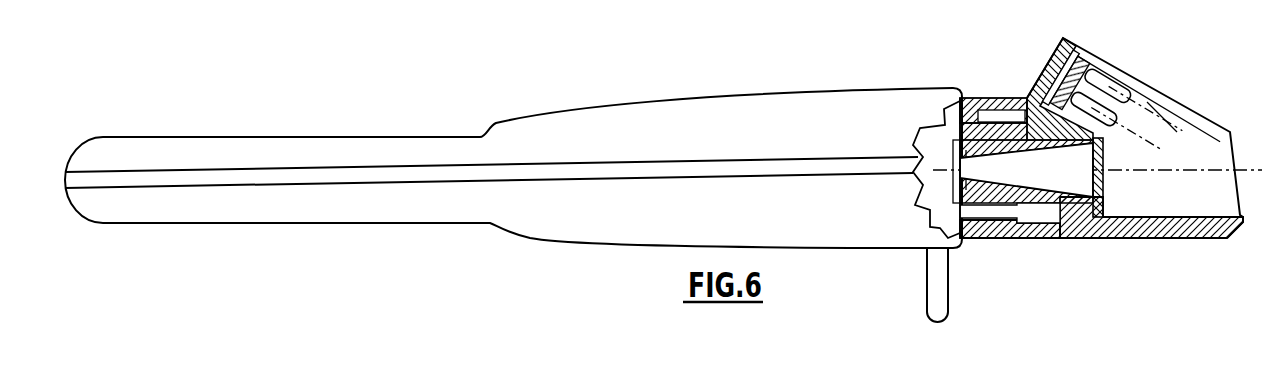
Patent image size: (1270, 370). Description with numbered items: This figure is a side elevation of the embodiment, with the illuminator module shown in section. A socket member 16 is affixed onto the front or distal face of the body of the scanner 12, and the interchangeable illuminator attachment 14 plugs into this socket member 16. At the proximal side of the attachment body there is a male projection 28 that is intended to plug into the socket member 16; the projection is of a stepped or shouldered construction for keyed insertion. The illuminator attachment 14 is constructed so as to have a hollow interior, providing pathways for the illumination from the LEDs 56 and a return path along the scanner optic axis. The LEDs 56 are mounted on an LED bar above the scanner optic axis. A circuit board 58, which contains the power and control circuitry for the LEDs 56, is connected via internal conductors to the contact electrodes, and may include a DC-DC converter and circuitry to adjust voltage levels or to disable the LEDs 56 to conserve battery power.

The scanner 12 is at (622, 101).
The interchangeable illuminator attachment 14 is at (1097, 179).
The socket member 16 is at (1003, 98).
The male projection 28 is at (948, 143).
The LEDs 56 is at (1138, 88).
The circuit board 58 is at (1088, 40).